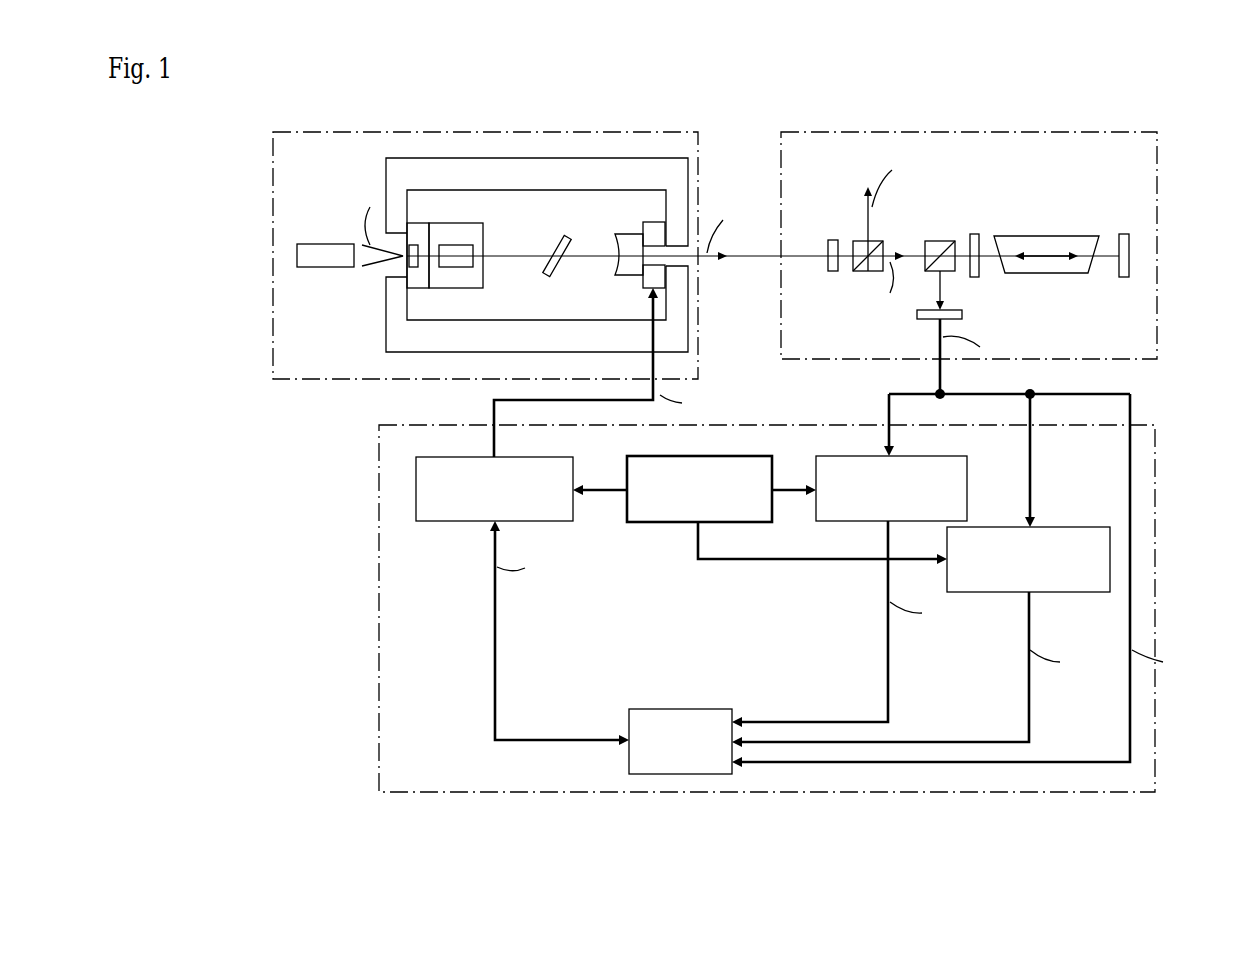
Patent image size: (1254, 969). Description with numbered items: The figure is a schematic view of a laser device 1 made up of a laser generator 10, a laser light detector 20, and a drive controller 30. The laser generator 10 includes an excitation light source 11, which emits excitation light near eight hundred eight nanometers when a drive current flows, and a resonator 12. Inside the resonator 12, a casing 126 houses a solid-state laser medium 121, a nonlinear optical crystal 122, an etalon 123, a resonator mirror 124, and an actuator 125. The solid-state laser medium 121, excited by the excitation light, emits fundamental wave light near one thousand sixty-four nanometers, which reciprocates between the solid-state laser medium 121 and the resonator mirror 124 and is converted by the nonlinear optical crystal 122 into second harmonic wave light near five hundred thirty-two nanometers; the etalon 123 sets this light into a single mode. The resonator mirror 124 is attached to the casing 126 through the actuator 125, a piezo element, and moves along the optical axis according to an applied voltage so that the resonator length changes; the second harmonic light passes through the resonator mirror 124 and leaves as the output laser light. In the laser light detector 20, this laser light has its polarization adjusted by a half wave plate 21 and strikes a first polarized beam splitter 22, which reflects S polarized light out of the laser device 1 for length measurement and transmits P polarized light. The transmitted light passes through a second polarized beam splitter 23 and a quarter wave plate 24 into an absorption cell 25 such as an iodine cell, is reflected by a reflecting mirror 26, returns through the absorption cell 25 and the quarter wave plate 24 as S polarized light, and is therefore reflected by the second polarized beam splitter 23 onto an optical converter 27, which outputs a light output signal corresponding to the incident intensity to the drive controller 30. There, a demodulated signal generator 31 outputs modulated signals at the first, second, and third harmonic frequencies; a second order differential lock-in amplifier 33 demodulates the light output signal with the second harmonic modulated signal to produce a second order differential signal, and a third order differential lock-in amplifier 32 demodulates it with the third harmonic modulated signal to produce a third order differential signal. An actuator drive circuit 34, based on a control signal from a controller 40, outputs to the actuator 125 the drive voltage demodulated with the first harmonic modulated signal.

The laser device 1 is at (825, 74).
The laser generator 10 is at (318, 132).
The excitation light source 11 is at (322, 244).
The resonator 12 is at (470, 148).
The solid-state laser medium 121 is at (413, 245).
The nonlinear optical crystal 122 is at (457, 248).
The etalon 123 is at (563, 265).
The resonator mirror 124 is at (631, 230).
The actuator 125 is at (654, 222).
The casing 126 is at (570, 172).
The laser light detector 20 is at (992, 132).
The ½ wave plate 21 is at (833, 240).
The first polarized beam splitter 22 is at (877, 241).
The second polarized beam splitter 23 is at (937, 241).
The ¼ wave plate 24 is at (975, 234).
The absorption cell 25 is at (1057, 236).
The reflecting mirror 26 is at (1123, 234).
The optical converter 27 is at (963, 313).
The drive controller 30 is at (1157, 478).
The demodulated signal generator 31 is at (703, 457).
The third order differential lock-in amplifier 32 is at (910, 456).
The second order differential lock-in amplifier 33 is at (1063, 527).
The actuator drive circuit 34 is at (512, 457).
The controller 40 is at (710, 709).